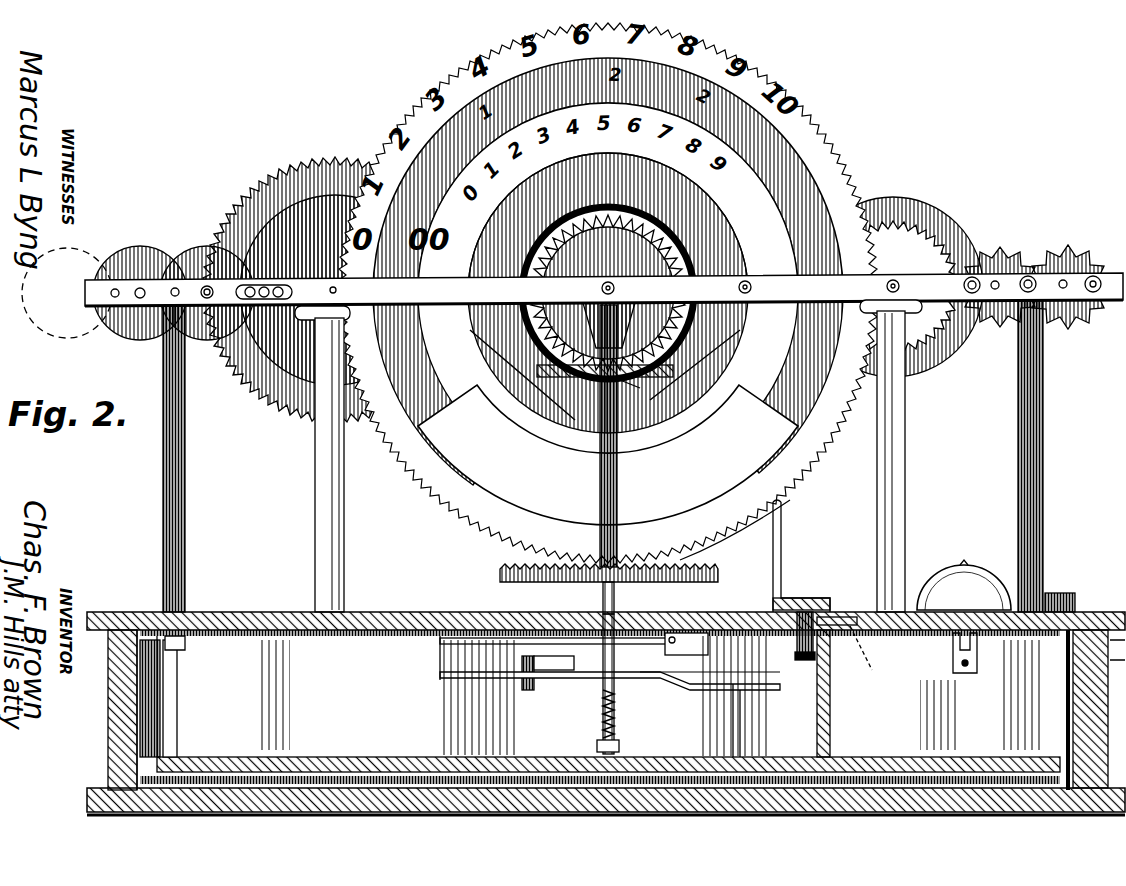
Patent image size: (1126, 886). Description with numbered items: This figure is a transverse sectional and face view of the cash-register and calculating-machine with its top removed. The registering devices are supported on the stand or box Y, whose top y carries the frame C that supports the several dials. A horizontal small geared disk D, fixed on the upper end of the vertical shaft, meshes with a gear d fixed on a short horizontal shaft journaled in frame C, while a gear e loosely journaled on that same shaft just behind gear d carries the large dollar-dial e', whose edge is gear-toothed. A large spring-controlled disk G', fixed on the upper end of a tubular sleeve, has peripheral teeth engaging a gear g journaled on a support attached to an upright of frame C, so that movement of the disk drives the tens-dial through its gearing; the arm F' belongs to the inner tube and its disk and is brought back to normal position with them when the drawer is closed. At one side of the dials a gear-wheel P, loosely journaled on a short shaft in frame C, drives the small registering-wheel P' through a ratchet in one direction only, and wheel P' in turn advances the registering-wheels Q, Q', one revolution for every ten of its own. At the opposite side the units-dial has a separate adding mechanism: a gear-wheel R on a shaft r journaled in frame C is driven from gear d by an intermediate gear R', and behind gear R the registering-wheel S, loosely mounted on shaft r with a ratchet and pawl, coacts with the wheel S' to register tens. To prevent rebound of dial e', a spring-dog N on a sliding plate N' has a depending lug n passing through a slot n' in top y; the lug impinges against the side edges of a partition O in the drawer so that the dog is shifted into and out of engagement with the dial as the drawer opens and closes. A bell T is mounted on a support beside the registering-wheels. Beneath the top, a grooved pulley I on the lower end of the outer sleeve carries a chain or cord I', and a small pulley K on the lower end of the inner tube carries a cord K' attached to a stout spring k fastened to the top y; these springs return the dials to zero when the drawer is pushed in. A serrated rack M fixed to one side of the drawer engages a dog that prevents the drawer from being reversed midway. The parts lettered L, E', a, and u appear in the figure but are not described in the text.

The gear-wheel P is at (335, 272).
The registering-wheel P' is at (329, 318).
The registering-wheel Q is at (207, 275).
The registering-wheel Q' is at (140, 273).
The gear-wheel R is at (893, 287).
The intermediate gear R' is at (745, 256).
The shaft r is at (336, 290).
The registering-wheel S is at (893, 275).
The registering-wheel S' is at (1000, 268).
The frame C is at (315, 462).
The gear e is at (608, 276).
The dollar-dial e' is at (608, 293).
The gear d is at (608, 293).
The geared disk D is at (537, 368).
The wedge block L is at (628, 318).
The indicating sector E' is at (608, 455).
The arm F' is at (640, 387).
The gear g is at (560, 566).
The disk G' is at (735, 538).
The spindle a is at (600, 598).
The spring-dog N is at (801, 556).
The sliding plate N' is at (813, 588).
The slot n' is at (840, 607).
The lug n is at (805, 660).
The partition O is at (832, 704).
The bracket u is at (977, 648).
The bell T is at (972, 572).
The top y is at (396, 612).
The stand or box Y is at (1117, 650).
The serrated rack M is at (160, 652).
The grooved pulley I is at (570, 641).
The chain or cord I' is at (684, 624).
The pulley K is at (629, 684).
The cord or chain K' is at (742, 720).
The spring k is at (599, 714).